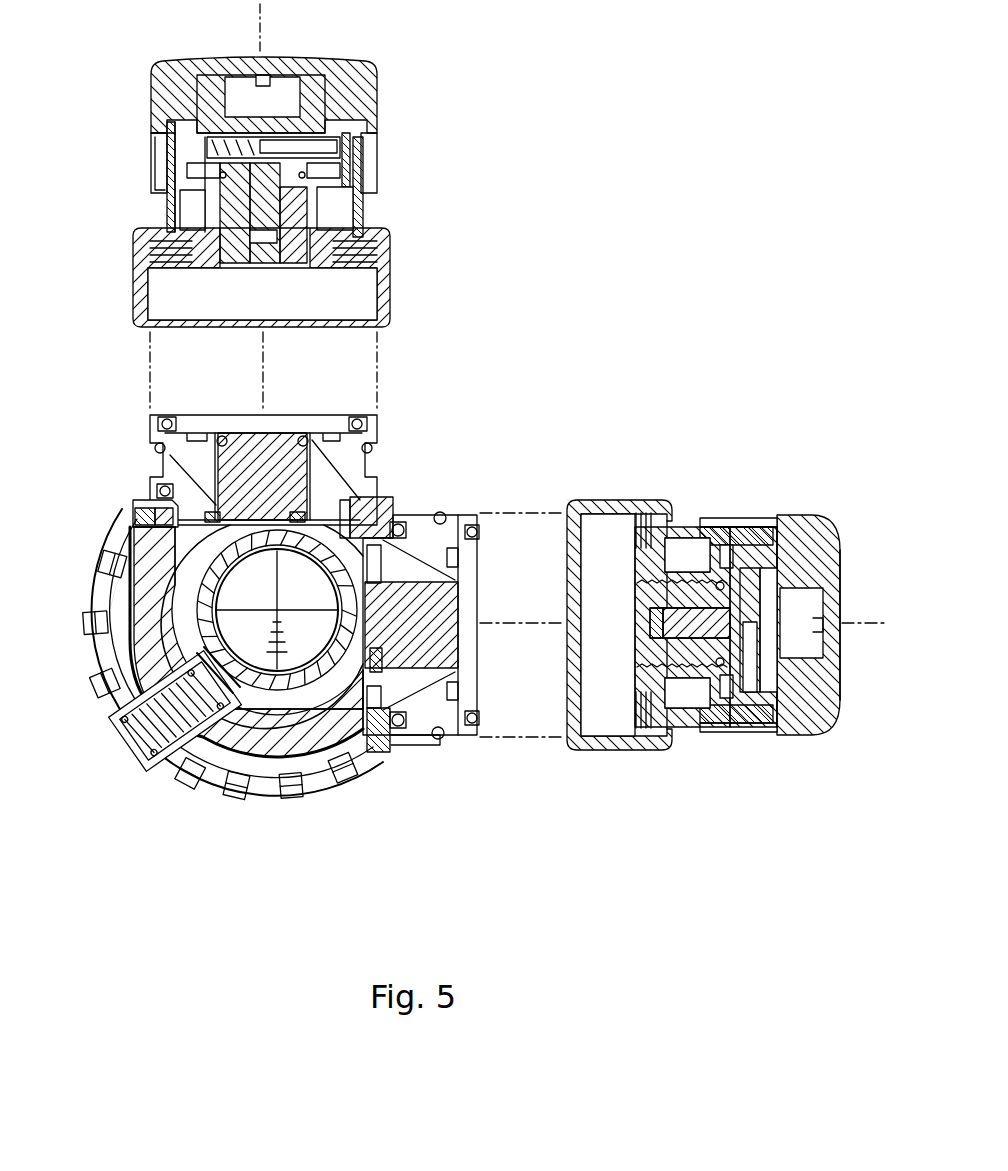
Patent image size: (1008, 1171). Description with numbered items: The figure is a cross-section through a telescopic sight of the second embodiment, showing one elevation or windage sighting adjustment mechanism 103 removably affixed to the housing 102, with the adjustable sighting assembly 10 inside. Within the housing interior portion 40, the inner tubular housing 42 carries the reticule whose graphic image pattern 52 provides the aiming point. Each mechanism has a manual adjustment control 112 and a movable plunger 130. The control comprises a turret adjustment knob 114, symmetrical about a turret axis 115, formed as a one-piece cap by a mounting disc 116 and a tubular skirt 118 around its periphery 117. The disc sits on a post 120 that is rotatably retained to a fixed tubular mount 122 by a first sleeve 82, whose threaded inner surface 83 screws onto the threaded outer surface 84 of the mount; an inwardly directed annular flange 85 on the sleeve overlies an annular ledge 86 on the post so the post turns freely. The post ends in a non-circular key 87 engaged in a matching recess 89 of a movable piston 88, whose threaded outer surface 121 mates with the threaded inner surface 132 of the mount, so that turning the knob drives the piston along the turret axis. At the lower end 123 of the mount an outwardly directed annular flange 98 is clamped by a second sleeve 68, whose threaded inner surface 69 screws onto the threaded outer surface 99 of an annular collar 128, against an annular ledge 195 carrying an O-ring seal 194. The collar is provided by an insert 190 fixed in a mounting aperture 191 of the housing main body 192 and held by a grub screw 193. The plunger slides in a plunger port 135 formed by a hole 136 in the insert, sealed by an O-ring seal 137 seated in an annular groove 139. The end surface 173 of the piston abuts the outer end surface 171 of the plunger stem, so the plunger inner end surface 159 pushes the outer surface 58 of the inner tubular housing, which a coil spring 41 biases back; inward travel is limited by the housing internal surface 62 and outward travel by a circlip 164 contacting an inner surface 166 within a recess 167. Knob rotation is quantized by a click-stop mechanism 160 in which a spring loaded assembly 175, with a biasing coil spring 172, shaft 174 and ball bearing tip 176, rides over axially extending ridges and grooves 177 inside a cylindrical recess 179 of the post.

The adjustable sighting assembly 10 is at (369, 765).
The housing interior portion 40 is at (200, 622).
The coil spring 41 is at (132, 757).
The inner tubular housing 42 is at (281, 752).
The graphic image pattern 52 is at (270, 605).
The outer surface of the tubular member 58 is at (323, 762).
The internal surface of the housing 62 is at (237, 762).
The second sleeve 68 is at (386, 259).
The threaded inner surface 69 is at (380, 286).
The first sleeve 82 is at (368, 152).
The threaded inner surface 83 is at (155, 161).
The threaded outer surface 84 is at (187, 172).
The inwardly directed annular flange 85 is at (175, 124).
The annular ledge 86 is at (168, 135).
The axially extending key 87 is at (270, 208).
The movable piston 88 is at (292, 214).
The axially extending recess 89 is at (180, 215).
The outwardly directed annular flange 98 is at (652, 729).
The threaded outer surface 99 is at (150, 425).
The housing 102 is at (205, 796).
The sighting adjustment mechanism 103 is at (272, 410).
The manual adjustment control 112 is at (358, 193).
The turret adjustment knob 114 is at (146, 79).
The turret axis 115 is at (262, 50).
The mounting disc 116 is at (835, 582).
The periphery of the disc 117 is at (830, 738).
The tubular skirt 118 is at (757, 728).
The post 120 is at (312, 90).
The threaded outer surface 121 is at (712, 540).
The tubular mount 122 is at (330, 147).
The lower end of the tubular mount 123 is at (680, 716).
The annular collar 128 is at (158, 473).
The movable plunger 130 is at (244, 424).
The threaded inner surface 132 is at (700, 590).
The plunger port 135 is at (352, 466).
The hole 136 is at (365, 471).
The seal 137 is at (297, 444).
The annular groove 139 is at (235, 435).
The plunger inner end surface 159 is at (160, 535).
The click-stop mechanism 160 is at (300, 114).
The circlip 164 is at (405, 740).
The inner surface of the housing interior 166 is at (385, 522).
The recess 167 is at (165, 495).
The outer end surface 171 is at (255, 430).
The biasing coil spring 172 is at (205, 118).
The end surface of the piston 173 is at (262, 244).
The shaft 174 is at (310, 142).
The spring loaded assembly 175 is at (772, 568).
The ball bearing tip 176 is at (769, 716).
The axially extending ridges and grooves 177 is at (765, 527).
The cylindrical recess 179 is at (752, 535).
The insert 190 is at (357, 436).
The mounting aperture 191 is at (133, 514).
The main body of the housing 192 is at (113, 560).
The grub screw 193 is at (379, 756).
The O-ring seal 194 is at (363, 421).
The annular ledge 195 is at (341, 420).